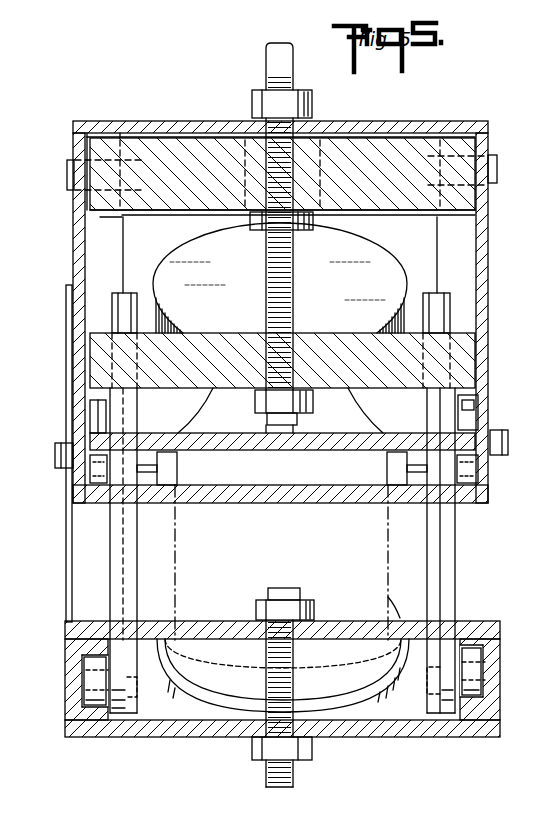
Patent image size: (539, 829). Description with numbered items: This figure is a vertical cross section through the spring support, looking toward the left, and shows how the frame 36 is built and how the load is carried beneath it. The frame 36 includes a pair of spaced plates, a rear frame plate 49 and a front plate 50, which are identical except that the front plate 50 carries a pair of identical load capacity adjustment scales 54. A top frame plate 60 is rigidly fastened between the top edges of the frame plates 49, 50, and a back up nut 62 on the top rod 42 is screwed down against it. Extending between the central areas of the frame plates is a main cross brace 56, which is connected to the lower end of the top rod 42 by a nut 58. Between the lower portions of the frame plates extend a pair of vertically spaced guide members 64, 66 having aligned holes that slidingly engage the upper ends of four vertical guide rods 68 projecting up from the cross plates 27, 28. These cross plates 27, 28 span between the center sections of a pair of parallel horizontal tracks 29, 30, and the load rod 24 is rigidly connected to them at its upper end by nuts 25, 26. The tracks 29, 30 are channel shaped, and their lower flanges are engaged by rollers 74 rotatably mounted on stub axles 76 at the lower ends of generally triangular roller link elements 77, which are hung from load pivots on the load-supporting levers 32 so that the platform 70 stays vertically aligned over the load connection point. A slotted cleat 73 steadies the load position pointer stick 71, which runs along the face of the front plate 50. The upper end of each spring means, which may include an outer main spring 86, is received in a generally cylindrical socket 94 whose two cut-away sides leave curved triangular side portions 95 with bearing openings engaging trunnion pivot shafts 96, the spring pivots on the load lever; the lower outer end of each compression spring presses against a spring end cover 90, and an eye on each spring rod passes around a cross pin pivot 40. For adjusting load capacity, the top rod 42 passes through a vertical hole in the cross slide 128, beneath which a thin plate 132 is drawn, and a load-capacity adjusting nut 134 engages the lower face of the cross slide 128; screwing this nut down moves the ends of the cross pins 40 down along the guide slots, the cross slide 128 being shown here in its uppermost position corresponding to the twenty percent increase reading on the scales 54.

The load rod 24 is at (266, 775).
The nut 25 is at (255, 752).
The nut 26 is at (311, 604).
The cross plate 27 is at (445, 738).
The cross plate 28 is at (477, 621).
The track 29 is at (68, 696).
The track 30 is at (494, 683).
The load-supporting lever 32 is at (92, 412).
The frame 36 is at (452, 108).
The cross pin pivot 40 is at (67, 173).
The top rod 42 is at (266, 62).
The rear frame plate 49 is at (482, 256).
The front plate 50 is at (75, 259).
The load capacity adjustment scale 54 is at (74, 207).
The main cross brace 56 is at (226, 345).
The nut 58 is at (256, 404).
The top frame plate 60 is at (345, 121).
The back up nut 62 is at (252, 98).
The guide member 64 is at (312, 450).
The guide member 66 is at (298, 504).
The vertical guide rod 68 is at (126, 292).
The platform 70 is at (281, 673).
The side plate 71 is at (67, 346).
The slotted cleat 73 is at (61, 470).
The roller 74 is at (90, 664).
The stub axle 76 is at (134, 688).
The roller link element 77 is at (110, 549).
The outer main spring 86 is at (186, 566).
The spring end cover 90 is at (362, 696).
The cylindrical socket 94 is at (378, 252).
The curved triangular side portion 95 is at (158, 415).
The trunnion pivot shaft 96 is at (160, 472).
The cross slide 128 is at (152, 142).
The plate 132 is at (100, 231).
The load-capacity adjusting nut 134 is at (256, 231).